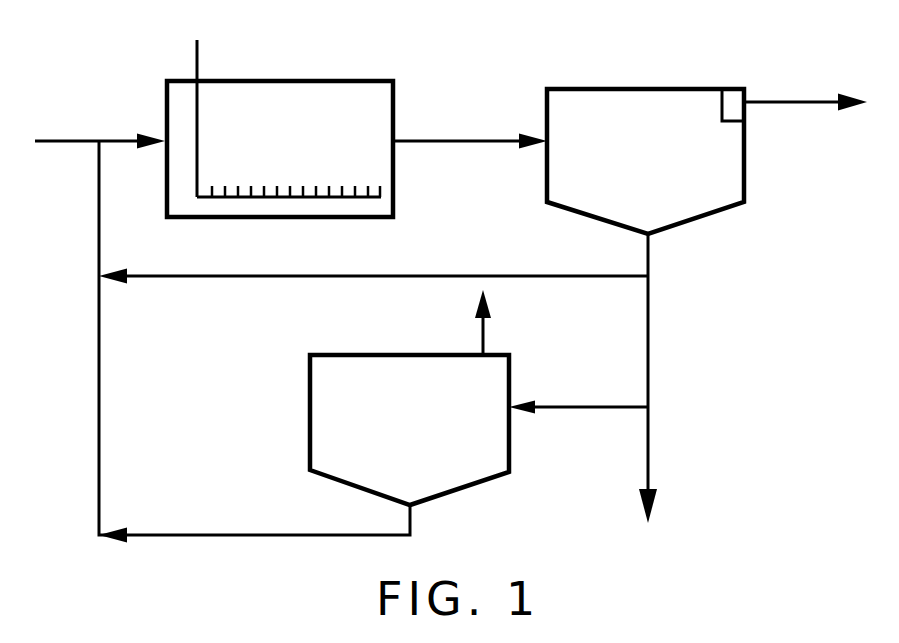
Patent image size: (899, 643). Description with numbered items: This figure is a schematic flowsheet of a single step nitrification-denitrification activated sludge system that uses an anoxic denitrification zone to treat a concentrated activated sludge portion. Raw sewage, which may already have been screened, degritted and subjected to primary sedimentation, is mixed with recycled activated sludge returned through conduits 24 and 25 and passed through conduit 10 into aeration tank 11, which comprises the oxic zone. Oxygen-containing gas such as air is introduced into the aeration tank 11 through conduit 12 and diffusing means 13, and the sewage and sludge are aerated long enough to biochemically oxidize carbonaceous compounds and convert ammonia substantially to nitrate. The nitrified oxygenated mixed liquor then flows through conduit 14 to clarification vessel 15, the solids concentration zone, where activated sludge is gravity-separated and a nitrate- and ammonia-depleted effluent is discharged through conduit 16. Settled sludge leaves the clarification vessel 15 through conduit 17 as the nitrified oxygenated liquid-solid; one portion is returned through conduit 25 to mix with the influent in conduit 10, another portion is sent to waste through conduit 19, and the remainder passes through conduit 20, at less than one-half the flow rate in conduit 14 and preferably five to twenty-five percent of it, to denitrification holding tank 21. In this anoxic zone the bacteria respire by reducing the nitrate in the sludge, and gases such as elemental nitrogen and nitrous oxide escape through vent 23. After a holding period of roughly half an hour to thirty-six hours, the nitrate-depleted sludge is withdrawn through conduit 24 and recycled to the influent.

The conduit 10 is at (56, 140).
The aeration tank 11 is at (393, 97).
The conduit 12 is at (197, 57).
The diffusing means 13 is at (272, 183).
The conduit 14 is at (457, 143).
The clarification vessel 15 is at (744, 187).
The conduit 16 is at (788, 100).
The conduit 17 is at (649, 358).
The conduit 19 is at (649, 470).
The conduit 20 is at (578, 405).
The denitrification holding tank 21 is at (403, 352).
The vent 23 is at (483, 340).
The conduit 24 is at (100, 443).
The conduit 25 is at (240, 278).